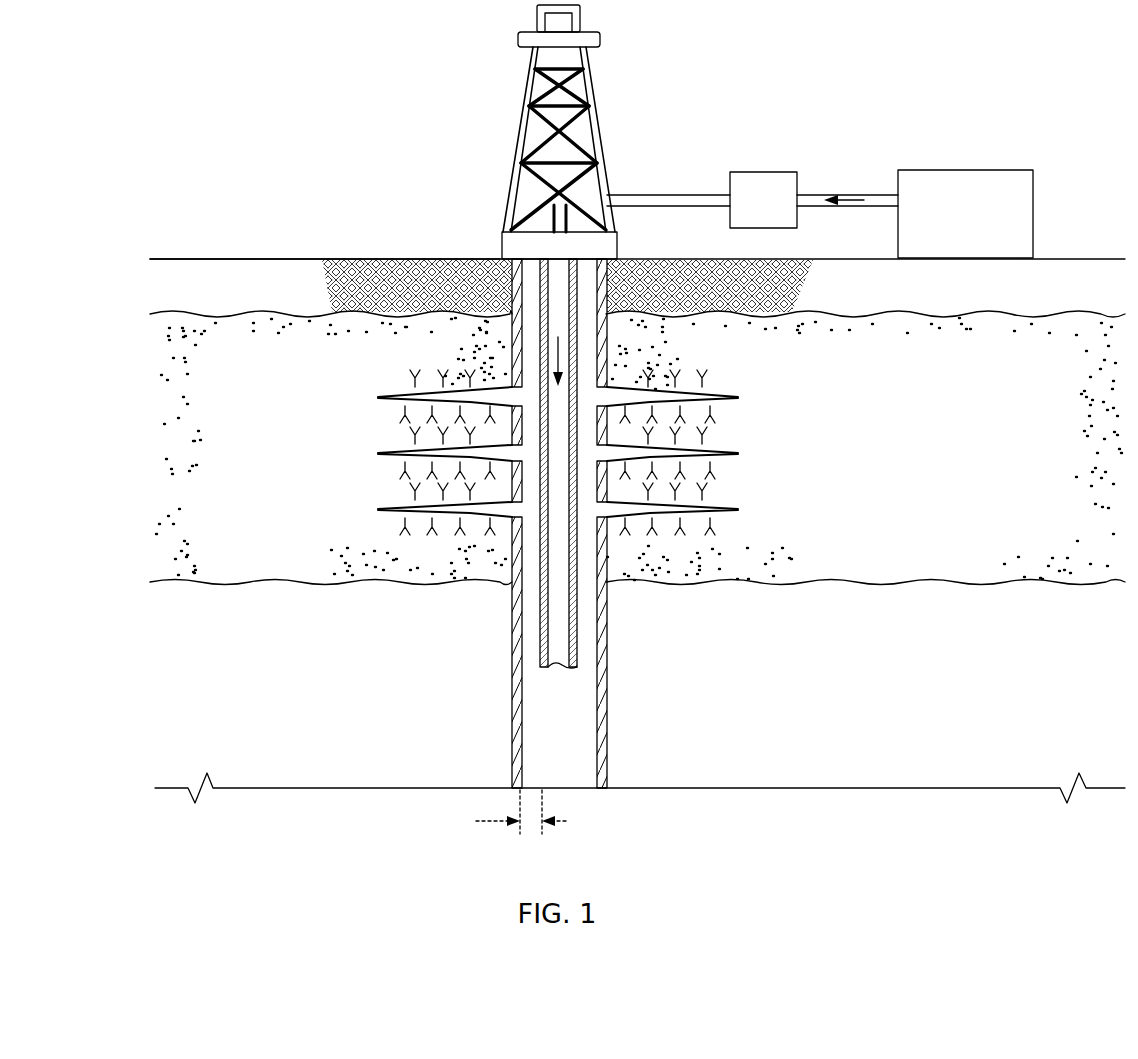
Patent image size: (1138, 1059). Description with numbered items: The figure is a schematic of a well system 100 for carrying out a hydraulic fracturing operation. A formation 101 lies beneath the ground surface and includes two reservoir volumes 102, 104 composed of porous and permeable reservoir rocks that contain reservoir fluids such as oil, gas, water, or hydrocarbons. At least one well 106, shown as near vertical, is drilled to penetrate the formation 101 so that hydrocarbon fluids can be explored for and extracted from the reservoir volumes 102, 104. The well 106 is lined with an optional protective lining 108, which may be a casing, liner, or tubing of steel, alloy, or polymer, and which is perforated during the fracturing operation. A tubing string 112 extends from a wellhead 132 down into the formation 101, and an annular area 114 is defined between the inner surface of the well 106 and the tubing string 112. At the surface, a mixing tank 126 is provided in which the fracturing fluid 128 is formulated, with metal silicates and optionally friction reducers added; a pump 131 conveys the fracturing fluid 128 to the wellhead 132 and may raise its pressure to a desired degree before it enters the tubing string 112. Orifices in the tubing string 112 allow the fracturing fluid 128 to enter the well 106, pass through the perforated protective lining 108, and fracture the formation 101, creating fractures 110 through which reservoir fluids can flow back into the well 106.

The well system 100 is at (265, 80).
The formation 101 is at (226, 282).
The reservoir volume 102 is at (147, 318).
The reservoir volume 104 is at (147, 586).
The well 106 is at (612, 285).
The protective lining 108 is at (608, 362).
The fractures 110 is at (364, 388).
The tubing string 112 is at (580, 612).
The annular area 114 is at (495, 822).
The mixing tank 126 is at (965, 214).
The fracturing fluid 128 is at (848, 202).
The pump 131 is at (752, 200).
The wellhead 132 is at (520, 135).